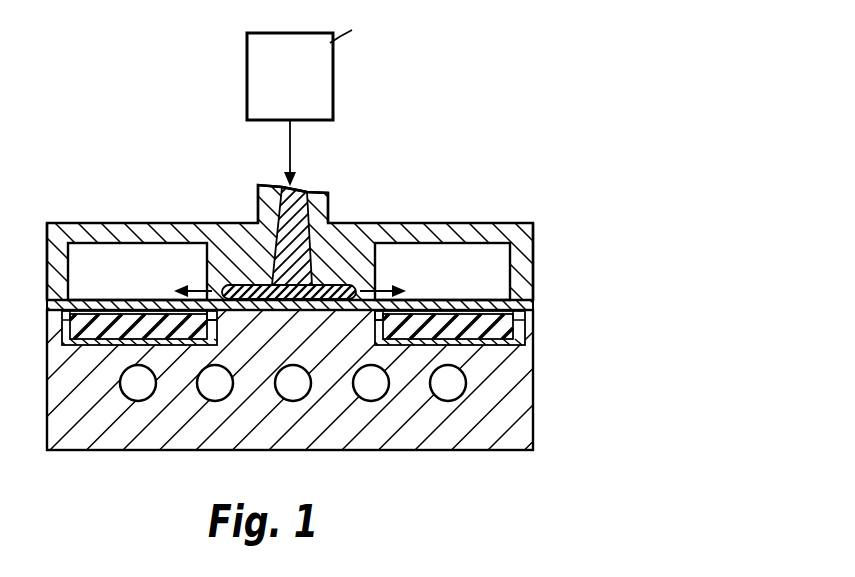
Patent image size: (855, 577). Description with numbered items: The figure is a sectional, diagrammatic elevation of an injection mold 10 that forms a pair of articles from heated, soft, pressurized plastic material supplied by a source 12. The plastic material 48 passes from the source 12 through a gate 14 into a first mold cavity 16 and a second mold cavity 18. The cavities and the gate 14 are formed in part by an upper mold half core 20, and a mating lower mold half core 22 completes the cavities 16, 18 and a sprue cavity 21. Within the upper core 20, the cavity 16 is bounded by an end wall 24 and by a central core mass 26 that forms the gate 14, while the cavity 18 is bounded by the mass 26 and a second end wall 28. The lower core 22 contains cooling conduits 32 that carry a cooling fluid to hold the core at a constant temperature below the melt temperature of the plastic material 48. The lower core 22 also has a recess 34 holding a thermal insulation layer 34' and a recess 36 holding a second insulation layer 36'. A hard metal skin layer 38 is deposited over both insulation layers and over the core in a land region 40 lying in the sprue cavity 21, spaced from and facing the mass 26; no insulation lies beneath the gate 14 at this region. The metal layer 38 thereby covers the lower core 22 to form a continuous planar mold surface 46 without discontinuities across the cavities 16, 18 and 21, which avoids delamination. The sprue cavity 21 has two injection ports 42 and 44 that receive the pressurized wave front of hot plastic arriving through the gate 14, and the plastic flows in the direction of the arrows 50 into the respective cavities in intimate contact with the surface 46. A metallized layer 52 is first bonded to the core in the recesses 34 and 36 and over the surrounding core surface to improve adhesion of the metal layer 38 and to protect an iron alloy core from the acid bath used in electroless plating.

The mold 10 is at (540, 223).
The source 12 is at (333, 100).
The gate 14 is at (327, 203).
The first mold cavity 16 is at (456, 252).
The second mold cavity 18 is at (101, 256).
The upper mold half core 20 is at (523, 223).
The sprue cavity 21 is at (228, 290).
The lower mold half core 22 is at (543, 407).
The end wall 24 is at (533, 264).
The central core mass 26 is at (352, 241).
The second end wall 28 is at (47, 262).
The cooling conduits 32 is at (371, 401).
The recess 34 is at (448, 353).
The thermal insulation layer 34' is at (480, 329).
The recess 36 is at (138, 353).
The second insulation layer 36' is at (110, 328).
The hard metal skin layer 38 is at (485, 300).
The land region 40 is at (306, 353).
The injection port 42 is at (348, 312).
The injection port 44 is at (222, 313).
The mold surface 46 is at (148, 300).
The plastic material 48 is at (252, 286).
The arrows 50 is at (192, 288).
The metallized layer 52 is at (172, 346).